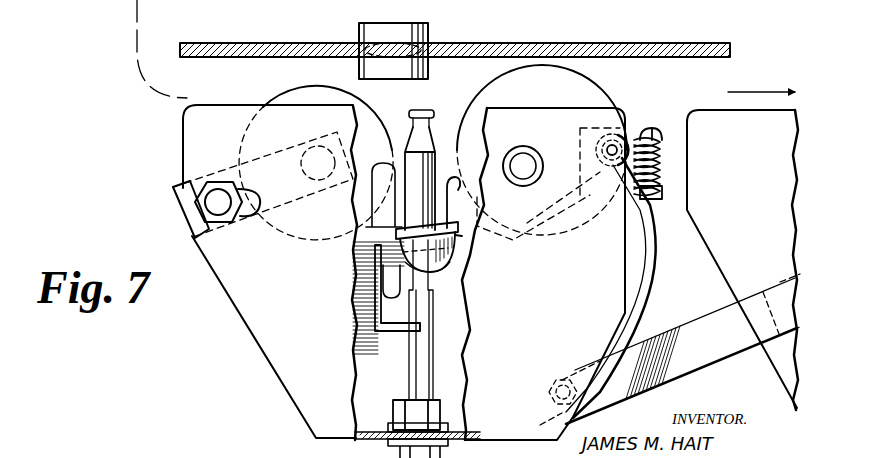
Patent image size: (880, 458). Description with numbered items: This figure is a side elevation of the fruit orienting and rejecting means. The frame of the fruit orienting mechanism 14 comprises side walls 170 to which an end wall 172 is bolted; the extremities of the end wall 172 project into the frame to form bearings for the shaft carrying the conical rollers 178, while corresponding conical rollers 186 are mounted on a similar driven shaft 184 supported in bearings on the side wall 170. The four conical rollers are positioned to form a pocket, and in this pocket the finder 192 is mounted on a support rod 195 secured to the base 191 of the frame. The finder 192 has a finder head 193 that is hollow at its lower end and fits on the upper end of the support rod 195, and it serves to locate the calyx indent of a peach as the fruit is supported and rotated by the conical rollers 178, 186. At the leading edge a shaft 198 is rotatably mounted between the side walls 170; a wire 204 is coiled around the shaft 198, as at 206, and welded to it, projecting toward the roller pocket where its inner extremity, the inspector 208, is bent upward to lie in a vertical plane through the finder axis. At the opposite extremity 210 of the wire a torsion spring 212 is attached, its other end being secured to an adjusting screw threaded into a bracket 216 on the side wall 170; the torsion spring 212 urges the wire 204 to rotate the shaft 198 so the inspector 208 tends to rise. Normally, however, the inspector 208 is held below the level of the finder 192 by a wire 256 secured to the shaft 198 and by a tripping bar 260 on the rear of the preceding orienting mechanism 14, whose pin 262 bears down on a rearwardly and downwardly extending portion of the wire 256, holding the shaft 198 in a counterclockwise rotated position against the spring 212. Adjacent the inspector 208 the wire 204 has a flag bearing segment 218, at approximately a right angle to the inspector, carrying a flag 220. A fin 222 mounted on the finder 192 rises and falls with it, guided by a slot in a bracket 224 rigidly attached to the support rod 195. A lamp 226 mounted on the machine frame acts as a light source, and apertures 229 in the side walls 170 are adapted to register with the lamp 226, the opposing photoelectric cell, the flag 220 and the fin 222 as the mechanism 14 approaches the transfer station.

The fruit orienting mechanism 14 is at (587, 107).
The side wall 170 is at (262, 348).
The end wall 172 is at (180, 224).
The conical roller 178 is at (285, 236).
The driven shaft 184 is at (523, 162).
The conical roller 186 is at (567, 92).
The base 191 is at (372, 440).
The finder 192 is at (437, 128).
The finder head 193 is at (422, 110).
The support rod 195 is at (410, 337).
The shaft 198 is at (572, 213).
The wire 204 is at (556, 234).
The coil of wire on shaft 206 is at (620, 132).
The inspector 208 is at (458, 186).
The extremity of wire inspector 210 is at (639, 140).
The torsion spring 212 is at (665, 160).
The bracket 216 is at (648, 196).
The flag bearing segment 218 is at (453, 262).
The flag 220 is at (445, 272).
The fin 222 is at (373, 198).
The bracket 224 is at (380, 307).
The lamp 226 is at (417, 32).
The aperture 229 is at (388, 280).
The wire 256 is at (650, 298).
The tripping bar 260 is at (683, 365).
The pin 262 is at (558, 380).